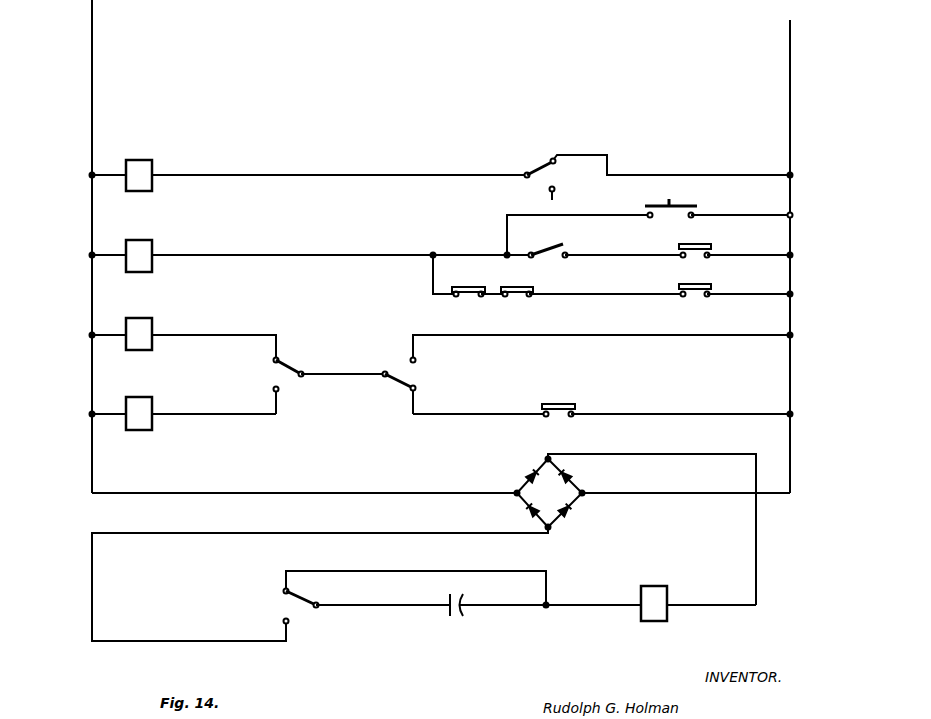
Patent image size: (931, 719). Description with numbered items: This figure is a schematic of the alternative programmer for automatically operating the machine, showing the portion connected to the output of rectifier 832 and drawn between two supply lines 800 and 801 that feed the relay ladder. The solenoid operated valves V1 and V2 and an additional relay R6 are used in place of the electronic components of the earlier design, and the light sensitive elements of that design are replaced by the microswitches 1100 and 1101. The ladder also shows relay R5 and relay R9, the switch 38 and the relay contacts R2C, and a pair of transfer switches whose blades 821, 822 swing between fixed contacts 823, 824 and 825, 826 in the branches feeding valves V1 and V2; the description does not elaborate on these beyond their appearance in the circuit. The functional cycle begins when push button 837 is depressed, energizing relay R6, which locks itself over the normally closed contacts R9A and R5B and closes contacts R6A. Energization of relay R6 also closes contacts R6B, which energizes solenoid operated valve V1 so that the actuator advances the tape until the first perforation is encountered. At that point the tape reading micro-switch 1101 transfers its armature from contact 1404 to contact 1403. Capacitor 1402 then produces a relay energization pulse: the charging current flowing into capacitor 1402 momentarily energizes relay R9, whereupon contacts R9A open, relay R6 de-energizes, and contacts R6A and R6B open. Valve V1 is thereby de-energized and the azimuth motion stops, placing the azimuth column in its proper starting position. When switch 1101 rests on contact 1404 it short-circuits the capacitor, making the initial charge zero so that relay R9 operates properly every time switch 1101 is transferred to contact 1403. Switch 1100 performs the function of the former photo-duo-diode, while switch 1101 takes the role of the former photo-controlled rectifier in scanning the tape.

The power supply line 800 is at (92, 45).
The power supply line 801 is at (790, 47).
The relay R5 coil R5 is at (309, 167).
The relay R6 is at (311, 248).
The solenoid operated valve V1 is at (183, 330).
The solenoid operated valve V2 is at (183, 405).
The microswitch 1100 is at (541, 167).
The push button 837 is at (681, 208).
The switch 38 is at (544, 252).
The relay R2 contact C R2C is at (736, 243).
The normally closed contacts R9A is at (469, 276).
The normally closed contacts R5B is at (592, 284).
The contacts R6A is at (736, 283).
The switch blade 821 is at (273, 363).
The switch blade 822 is at (390, 353).
The switch contact 823 is at (280, 358).
The switch contact 824 is at (280, 392).
The switch contact 825 is at (418, 360).
The switch contact 826 is at (418, 389).
The contacts R6B is at (603, 403).
The rectifier 832 is at (572, 497).
The contact 1404 is at (284, 590).
The tape reading micro-switch 1101 is at (300, 598).
The contact 1403 is at (284, 621).
The capacitor 1402 is at (455, 615).
The relay R9 is at (698, 594).